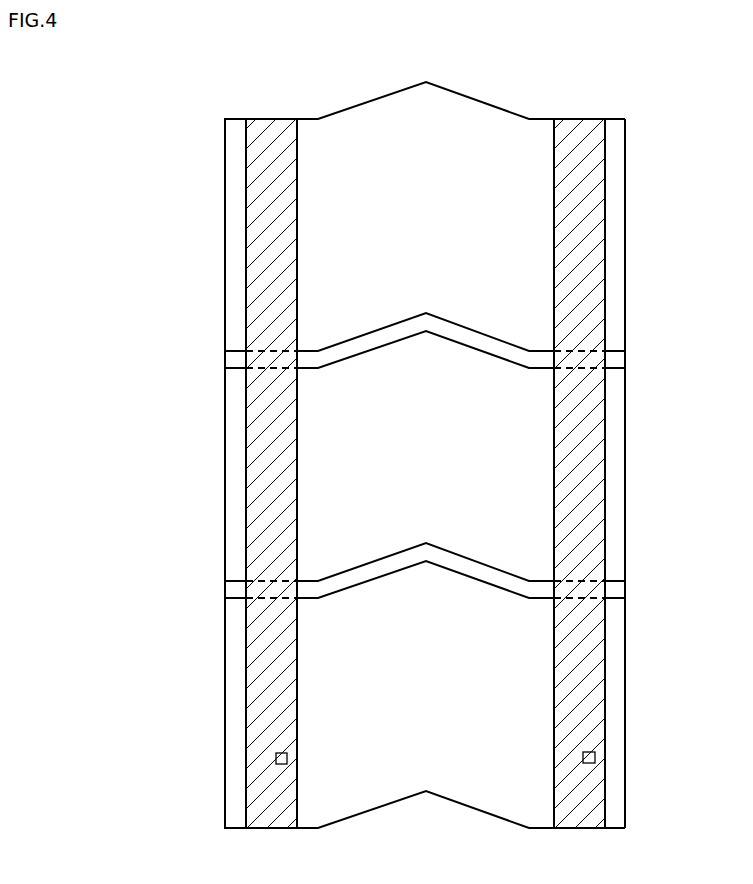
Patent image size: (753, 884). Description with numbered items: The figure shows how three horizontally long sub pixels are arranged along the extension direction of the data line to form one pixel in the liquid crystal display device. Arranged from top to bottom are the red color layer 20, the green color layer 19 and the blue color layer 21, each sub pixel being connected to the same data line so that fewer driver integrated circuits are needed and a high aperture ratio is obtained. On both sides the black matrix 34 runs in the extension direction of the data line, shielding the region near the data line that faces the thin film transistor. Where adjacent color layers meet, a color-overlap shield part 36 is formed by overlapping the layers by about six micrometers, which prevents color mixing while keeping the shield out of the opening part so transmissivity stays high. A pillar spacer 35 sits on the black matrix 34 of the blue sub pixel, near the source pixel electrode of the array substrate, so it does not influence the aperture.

The green (G) layer 19 is at (237, 484).
The red (R) layer 20 is at (237, 247).
The blue (B) layer 21 is at (237, 717).
The black matrix 34 is at (259, 824).
The pillar spacer 35 is at (288, 762).
The color-overlap shield part 36 is at (617, 358).